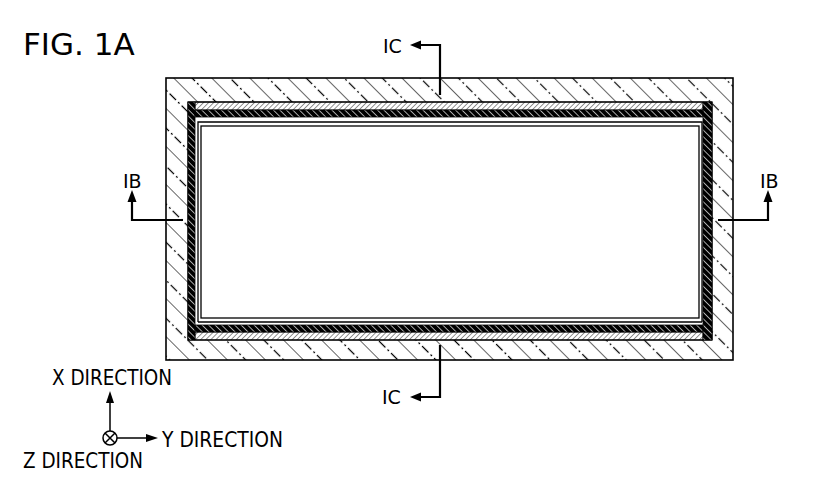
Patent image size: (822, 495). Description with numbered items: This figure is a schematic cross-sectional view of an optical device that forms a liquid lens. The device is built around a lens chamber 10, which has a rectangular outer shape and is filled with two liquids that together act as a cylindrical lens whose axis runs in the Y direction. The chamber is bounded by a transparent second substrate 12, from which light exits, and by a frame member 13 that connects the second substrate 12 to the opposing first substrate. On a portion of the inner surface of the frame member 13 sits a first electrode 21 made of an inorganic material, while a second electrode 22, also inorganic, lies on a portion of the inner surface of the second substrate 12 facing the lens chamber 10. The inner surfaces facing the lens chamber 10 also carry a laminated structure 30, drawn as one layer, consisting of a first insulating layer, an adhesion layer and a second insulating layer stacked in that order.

The lens chamber 10 is at (551, 156).
The second substrate 12 is at (703, 132).
The frame member 13 is at (255, 88).
The first electrode 21 is at (292, 106).
The second electrode 22 is at (517, 300).
The laminated structure 30 is at (206, 113).